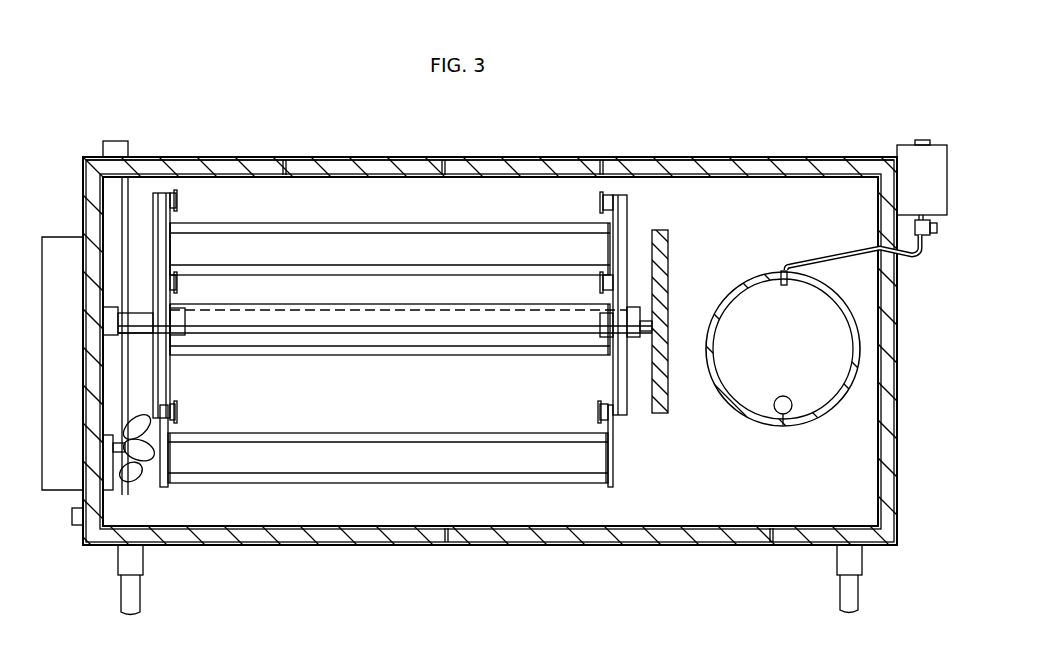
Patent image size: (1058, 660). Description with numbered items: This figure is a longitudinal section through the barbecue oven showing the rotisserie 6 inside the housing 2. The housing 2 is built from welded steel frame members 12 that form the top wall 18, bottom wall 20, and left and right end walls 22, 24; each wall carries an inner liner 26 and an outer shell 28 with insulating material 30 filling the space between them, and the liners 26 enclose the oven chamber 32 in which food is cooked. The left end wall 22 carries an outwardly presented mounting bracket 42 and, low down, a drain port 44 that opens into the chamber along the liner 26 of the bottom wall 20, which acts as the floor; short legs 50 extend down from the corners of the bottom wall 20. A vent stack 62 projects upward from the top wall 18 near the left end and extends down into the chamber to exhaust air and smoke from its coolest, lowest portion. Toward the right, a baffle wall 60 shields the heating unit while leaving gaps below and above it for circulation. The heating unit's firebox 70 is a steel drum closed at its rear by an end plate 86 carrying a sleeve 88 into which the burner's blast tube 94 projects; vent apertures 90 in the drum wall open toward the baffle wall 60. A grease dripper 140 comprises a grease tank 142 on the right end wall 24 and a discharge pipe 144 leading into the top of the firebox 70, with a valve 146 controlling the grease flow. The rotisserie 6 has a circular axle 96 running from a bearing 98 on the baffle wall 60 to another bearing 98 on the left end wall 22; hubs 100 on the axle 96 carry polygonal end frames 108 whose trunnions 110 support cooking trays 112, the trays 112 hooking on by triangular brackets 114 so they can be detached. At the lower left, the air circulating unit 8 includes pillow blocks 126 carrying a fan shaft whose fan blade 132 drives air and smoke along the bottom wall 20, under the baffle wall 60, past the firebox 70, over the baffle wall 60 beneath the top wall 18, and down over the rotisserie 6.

The housing 2 is at (698, 155).
The rotisserie 6 is at (345, 218).
The air circulating unit 8 is at (128, 490).
The frame members 12 is at (284, 157).
The top wall 18 is at (530, 157).
The bottom wall 20 is at (392, 546).
The left end wall 22 is at (83, 178).
The right end wall 24 is at (898, 372).
The liner 26 is at (395, 178).
The shell 28 is at (406, 157).
The insulating material 30 is at (805, 160).
The oven chamber 32 is at (350, 394).
The mounting bracket 42 is at (446, 546).
The drain port 44 is at (76, 526).
The legs 50 is at (135, 567).
The baffle wall 60 is at (666, 265).
The vent stack 62 is at (122, 143).
The firebox 70 is at (766, 418).
The end plate 86 is at (748, 385).
The sleeve 88 is at (787, 396).
The vent apertures 90 is at (772, 275).
The blast tube 94 is at (783, 414).
The axle 96 is at (398, 340).
The bearings 98 is at (112, 322).
The hubs 100 is at (183, 336).
The end frames 108 is at (158, 382).
The trunnions 110 is at (178, 200).
The cooking trays 112 is at (450, 235).
The triangular brackets 114 is at (172, 254).
The pillow blocks 126 is at (103, 455).
The fan blade 132 is at (135, 452).
The grease dripper 140 is at (937, 135).
The grease tank 142 is at (912, 150).
The discharge pipe 144 is at (836, 250).
The valve 146 is at (925, 236).